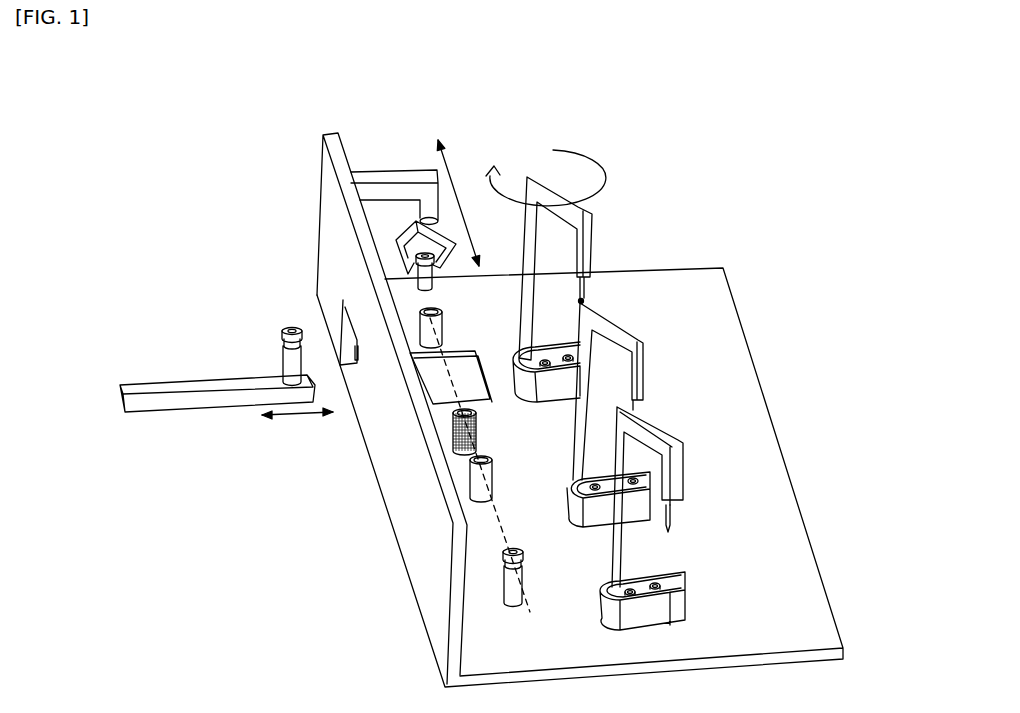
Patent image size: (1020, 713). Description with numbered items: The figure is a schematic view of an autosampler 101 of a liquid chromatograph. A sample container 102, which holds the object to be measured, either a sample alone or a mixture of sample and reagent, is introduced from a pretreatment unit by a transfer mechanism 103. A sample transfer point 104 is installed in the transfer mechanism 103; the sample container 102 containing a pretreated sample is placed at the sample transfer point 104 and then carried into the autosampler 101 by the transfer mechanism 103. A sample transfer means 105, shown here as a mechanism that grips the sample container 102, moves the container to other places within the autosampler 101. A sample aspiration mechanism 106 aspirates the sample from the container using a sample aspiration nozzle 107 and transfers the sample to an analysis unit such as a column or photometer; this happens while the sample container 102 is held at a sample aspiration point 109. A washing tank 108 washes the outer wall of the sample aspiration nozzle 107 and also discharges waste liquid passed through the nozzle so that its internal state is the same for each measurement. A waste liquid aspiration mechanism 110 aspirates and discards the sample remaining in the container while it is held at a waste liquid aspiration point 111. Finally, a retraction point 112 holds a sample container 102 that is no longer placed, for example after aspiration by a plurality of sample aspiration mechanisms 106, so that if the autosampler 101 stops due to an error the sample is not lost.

The autosampler 101 is at (488, 124).
The sample container 102 is at (502, 557).
The transfer mechanism 103 is at (182, 378).
The sample transfer point 104 is at (285, 363).
The sample transfer means 105 is at (410, 170).
The sample aspiration mechanism 106 is at (678, 440).
The sample aspiration nozzle 107 is at (670, 532).
The washing tank 108 is at (686, 566).
The sample aspiration point 109 is at (470, 485).
The waste liquid aspiration mechanism 110 is at (592, 228).
The waste liquid aspiration point 111 is at (415, 306).
The retraction point 112 is at (452, 445).